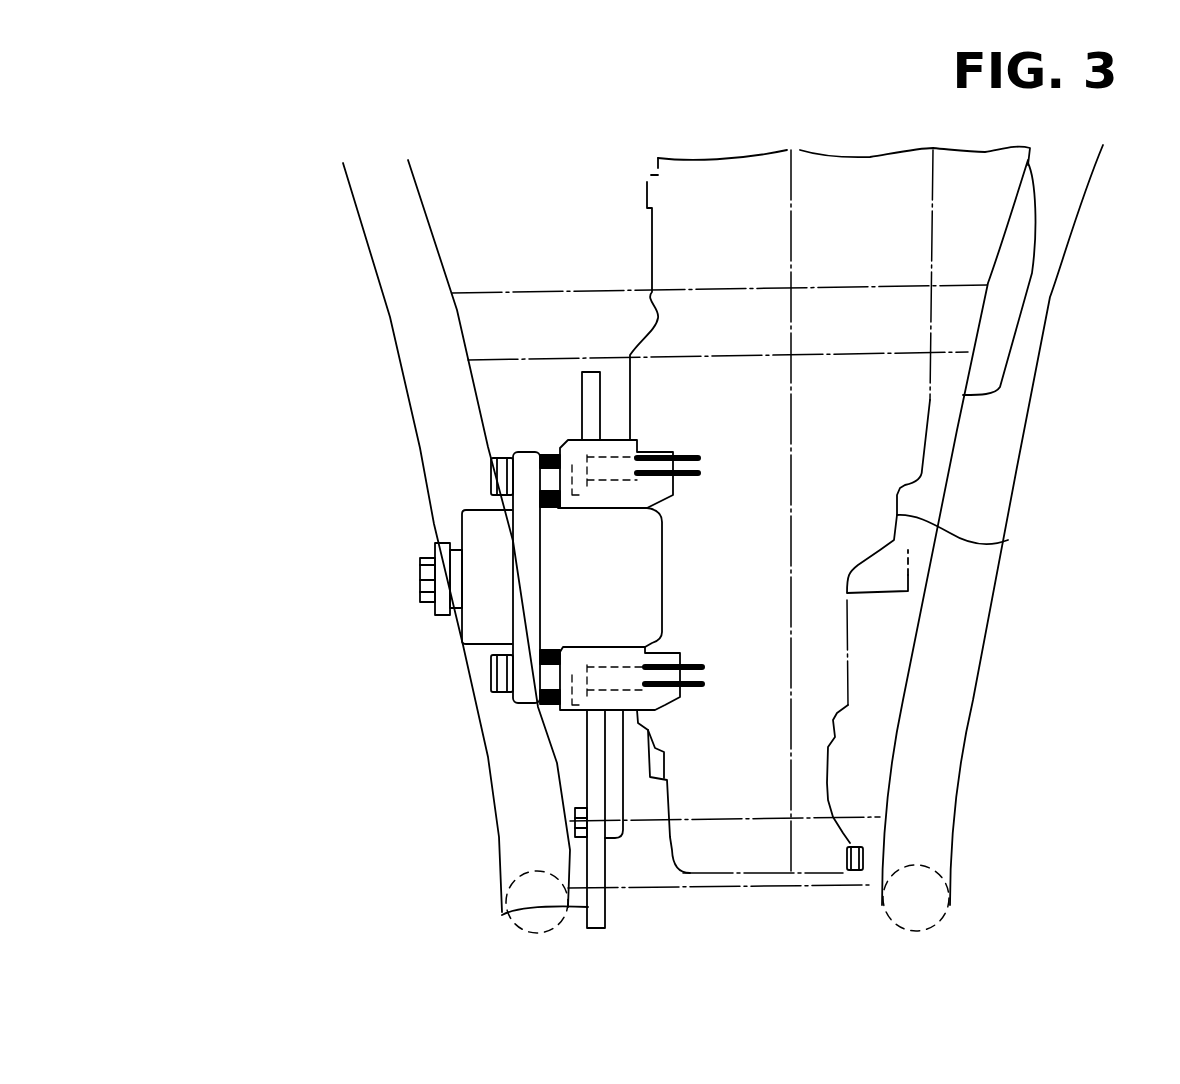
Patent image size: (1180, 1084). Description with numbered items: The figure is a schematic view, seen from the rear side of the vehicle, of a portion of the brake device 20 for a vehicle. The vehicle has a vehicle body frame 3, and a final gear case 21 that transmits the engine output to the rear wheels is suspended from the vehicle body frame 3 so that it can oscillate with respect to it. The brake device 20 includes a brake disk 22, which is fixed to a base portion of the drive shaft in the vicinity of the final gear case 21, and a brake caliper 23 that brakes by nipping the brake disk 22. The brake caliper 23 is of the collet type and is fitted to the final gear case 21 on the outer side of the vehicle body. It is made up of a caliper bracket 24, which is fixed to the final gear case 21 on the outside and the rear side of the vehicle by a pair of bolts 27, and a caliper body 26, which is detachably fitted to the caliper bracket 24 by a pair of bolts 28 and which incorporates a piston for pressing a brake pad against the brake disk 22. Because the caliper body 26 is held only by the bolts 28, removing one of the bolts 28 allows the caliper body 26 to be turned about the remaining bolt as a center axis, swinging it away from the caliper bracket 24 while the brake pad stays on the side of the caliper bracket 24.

The vehicle body frame 3 is at (380, 276).
The brake device 20 is at (475, 501).
The final gear case 21 is at (1023, 537).
The brake disk 22 is at (502, 915).
The brake caliper 23 is at (460, 642).
The caliper bracket 24 is at (614, 438).
The caliper body 26 is at (484, 579).
The bolts 27 is at (700, 460).
The bolts 28 is at (490, 477).